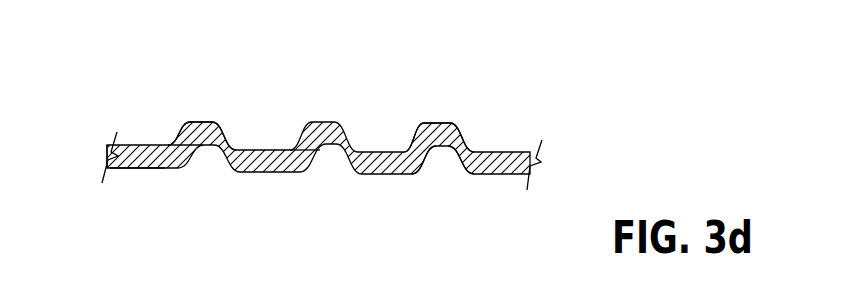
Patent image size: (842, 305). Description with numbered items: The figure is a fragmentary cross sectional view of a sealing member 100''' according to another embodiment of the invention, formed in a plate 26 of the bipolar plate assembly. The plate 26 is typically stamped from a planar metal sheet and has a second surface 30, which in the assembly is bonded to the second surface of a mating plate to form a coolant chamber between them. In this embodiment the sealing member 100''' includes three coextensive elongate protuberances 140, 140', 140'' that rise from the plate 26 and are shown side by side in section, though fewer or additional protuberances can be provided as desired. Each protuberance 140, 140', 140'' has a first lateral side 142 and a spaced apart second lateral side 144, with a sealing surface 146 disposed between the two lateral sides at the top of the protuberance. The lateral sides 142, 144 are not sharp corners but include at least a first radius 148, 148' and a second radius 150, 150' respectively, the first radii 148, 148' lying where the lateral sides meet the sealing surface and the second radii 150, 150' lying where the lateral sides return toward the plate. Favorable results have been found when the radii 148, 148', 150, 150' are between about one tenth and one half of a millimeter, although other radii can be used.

The sealing member 100''' is at (376, 99).
The plate 26 is at (116, 151).
The second surface 30 is at (132, 168).
The protuberance 140 is at (193, 192).
The protuberance 140' is at (316, 192).
The protuberance 140'' is at (453, 82).
The first lateral side 142 is at (162, 143).
The second lateral side 144 is at (246, 147).
The sealing surface 146 is at (209, 122).
The first radius 148 is at (392, 120).
The first radius 148' is at (486, 120).
The second radius 150 is at (420, 175).
The second radius 150' is at (464, 175).